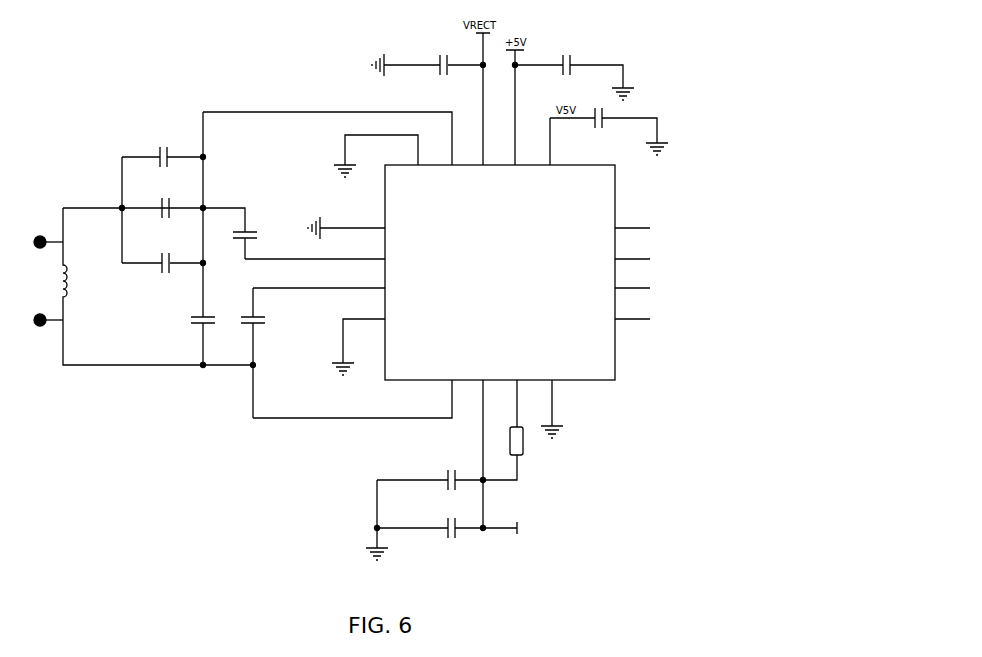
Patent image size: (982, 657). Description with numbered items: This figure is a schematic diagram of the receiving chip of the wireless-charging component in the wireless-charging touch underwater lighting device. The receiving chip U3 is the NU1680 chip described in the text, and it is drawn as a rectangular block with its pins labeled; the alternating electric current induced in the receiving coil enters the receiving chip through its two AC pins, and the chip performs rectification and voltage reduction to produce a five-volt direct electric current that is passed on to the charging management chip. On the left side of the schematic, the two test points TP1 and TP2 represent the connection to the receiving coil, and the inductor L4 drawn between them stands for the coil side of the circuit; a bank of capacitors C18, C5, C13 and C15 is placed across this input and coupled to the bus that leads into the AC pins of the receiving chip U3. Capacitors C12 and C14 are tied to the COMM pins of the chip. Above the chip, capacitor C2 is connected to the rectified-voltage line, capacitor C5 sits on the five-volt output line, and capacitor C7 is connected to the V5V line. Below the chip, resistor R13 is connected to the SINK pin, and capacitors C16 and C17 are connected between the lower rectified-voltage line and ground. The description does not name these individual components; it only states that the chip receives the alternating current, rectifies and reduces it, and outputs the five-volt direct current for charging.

The wireless power receiver IC NU1680 U3 is at (440, 280).
The capacitor 10uF C2 is at (429, 65).
The capacitor C5 is at (574, 74).
The capacitor 4.7uF C7 is at (609, 122).
The capacitor 10nF C12 is at (266, 233).
The capacitor C13 is at (162, 255).
The capacitor 10nF C14 is at (288, 353).
The capacitor 2.2nF C15 is at (165, 331).
The capacitor 10uF C16 is at (424, 512).
The capacitor 0.1uF C17 is at (466, 532).
The capacitor 0.1uF C18 is at (162, 154).
The resistor 220R R13 is at (539, 455).
The receiver coil inductor L4 is at (133, 286).
The test point 1 TP1 is at (31, 242).
The test point 2 TP2 is at (31, 320).